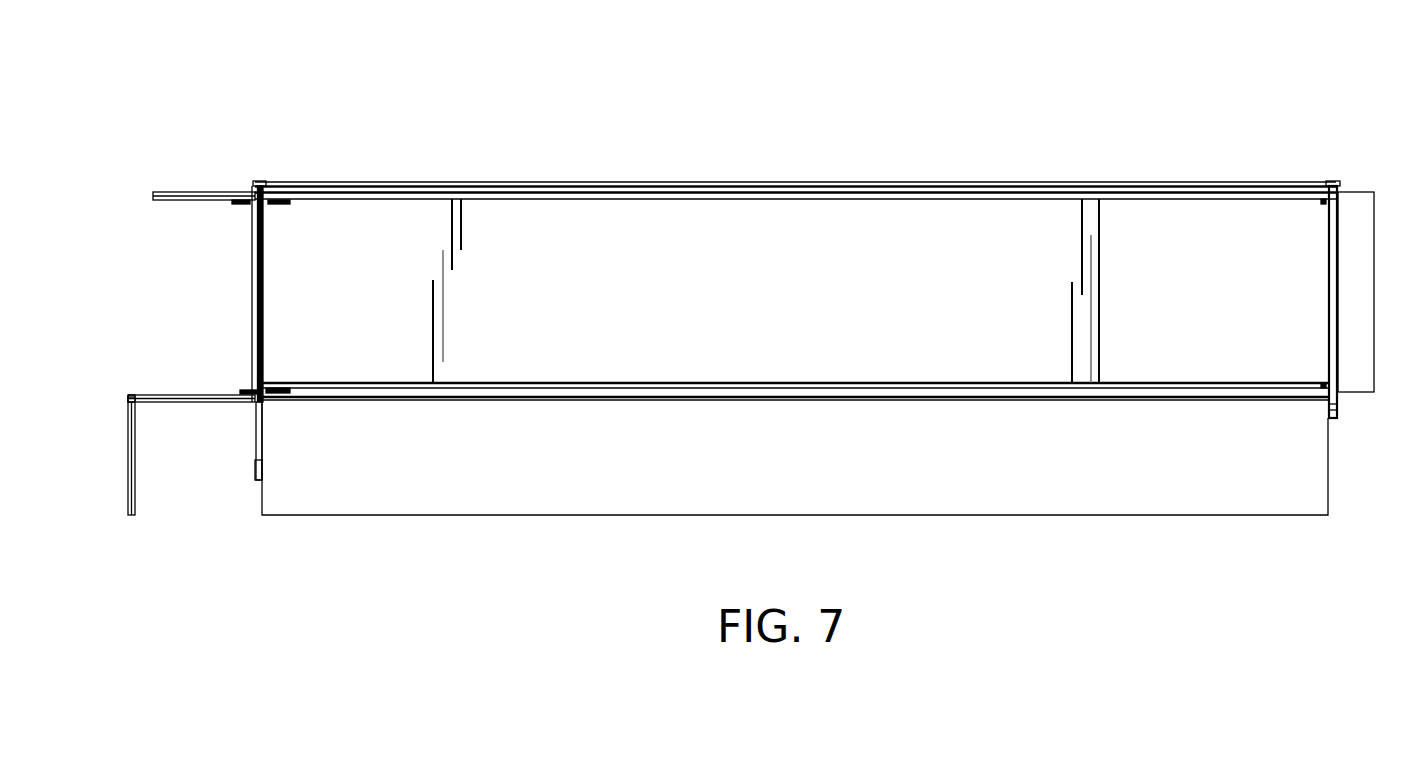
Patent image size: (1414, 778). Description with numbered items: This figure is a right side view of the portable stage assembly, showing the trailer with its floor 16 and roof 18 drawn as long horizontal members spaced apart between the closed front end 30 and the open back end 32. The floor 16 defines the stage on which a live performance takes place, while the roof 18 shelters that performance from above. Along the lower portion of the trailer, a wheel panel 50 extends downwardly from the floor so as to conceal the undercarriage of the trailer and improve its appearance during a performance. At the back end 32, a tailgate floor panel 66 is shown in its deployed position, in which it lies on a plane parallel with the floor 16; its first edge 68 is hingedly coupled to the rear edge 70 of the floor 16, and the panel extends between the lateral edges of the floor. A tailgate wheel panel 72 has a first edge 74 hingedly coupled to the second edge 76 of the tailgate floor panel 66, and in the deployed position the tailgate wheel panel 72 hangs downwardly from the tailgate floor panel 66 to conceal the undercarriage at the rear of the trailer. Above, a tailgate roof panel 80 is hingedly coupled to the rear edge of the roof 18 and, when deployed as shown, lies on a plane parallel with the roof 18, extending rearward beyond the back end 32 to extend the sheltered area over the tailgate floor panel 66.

The floor 16 is at (893, 383).
The roof 18 is at (715, 186).
The front end 30 is at (1338, 258).
The back end 32 is at (253, 238).
The wheel panel 50 is at (1127, 478).
The tailgate floor panel 66 is at (180, 393).
The first edge 68 is at (245, 402).
The rear edge 70 is at (257, 345).
The tailgate wheel panel 72 is at (128, 427).
The first edge 74 is at (130, 393).
The second edge 76 is at (130, 393).
The tailgate roof panel 80 is at (158, 192).